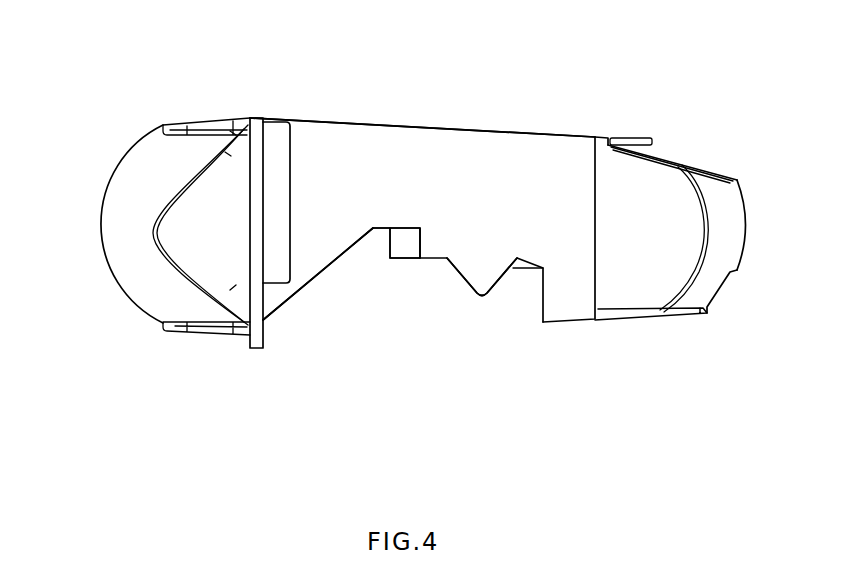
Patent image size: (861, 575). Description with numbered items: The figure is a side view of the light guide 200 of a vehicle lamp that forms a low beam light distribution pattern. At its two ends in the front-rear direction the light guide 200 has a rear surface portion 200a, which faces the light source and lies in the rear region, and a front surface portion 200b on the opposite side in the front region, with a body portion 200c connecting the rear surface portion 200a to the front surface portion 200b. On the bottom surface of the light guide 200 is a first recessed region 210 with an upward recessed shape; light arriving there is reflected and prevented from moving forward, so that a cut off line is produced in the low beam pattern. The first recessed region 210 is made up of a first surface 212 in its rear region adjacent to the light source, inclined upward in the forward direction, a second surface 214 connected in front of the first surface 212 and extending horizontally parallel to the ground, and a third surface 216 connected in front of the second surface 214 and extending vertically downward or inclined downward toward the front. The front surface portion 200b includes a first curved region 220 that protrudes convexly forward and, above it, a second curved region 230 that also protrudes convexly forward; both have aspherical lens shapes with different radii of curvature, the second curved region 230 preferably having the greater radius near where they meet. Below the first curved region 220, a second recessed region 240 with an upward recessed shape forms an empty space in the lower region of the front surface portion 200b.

The light guide 200 is at (367, 88).
The rear surface portion 200a is at (110, 227).
The front surface portion 200b is at (710, 211).
The body portion 200c is at (458, 143).
The first recessed region 210 is at (403, 322).
The first surface 212 is at (323, 270).
The second surface 214 is at (400, 230).
The third surface 216 is at (477, 302).
The first curved region 220 is at (745, 205).
The second curved region 230 is at (686, 158).
The second recessed region 240 is at (721, 290).